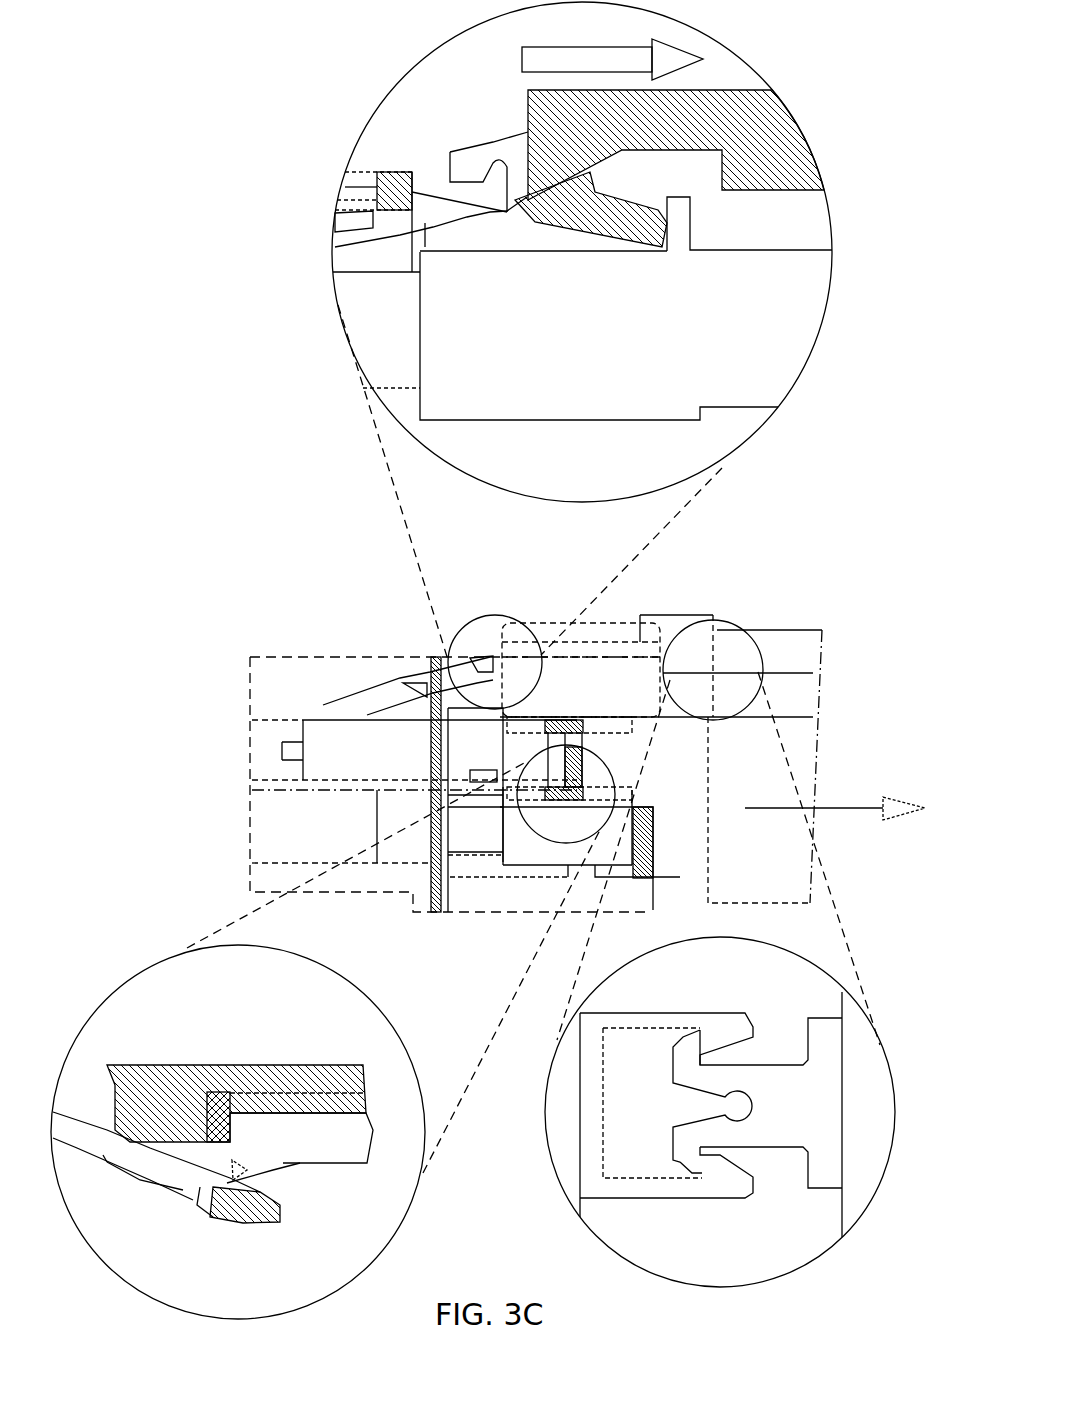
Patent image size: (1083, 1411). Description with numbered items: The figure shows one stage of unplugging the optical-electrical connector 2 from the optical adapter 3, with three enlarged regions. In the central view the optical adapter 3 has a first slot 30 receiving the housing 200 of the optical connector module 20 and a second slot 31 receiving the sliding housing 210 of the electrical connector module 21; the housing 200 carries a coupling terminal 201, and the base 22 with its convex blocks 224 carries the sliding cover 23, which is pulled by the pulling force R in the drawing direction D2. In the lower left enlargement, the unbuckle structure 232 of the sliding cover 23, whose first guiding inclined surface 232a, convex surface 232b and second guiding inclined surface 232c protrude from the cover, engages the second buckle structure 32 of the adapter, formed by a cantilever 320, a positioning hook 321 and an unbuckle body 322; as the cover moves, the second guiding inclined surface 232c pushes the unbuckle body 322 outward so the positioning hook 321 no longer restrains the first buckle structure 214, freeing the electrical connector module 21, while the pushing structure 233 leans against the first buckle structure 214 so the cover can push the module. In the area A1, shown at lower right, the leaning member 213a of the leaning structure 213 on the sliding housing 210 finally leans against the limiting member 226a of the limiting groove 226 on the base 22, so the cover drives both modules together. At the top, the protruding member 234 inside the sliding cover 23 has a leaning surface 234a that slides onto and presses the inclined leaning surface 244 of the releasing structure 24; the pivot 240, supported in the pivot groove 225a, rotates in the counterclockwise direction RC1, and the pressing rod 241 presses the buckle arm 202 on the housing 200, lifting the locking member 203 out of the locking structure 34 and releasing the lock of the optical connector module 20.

The counterclockwise direction RC1 is at (424, 135).
The pulling force R is at (668, 50).
The optical-electrical connector 2 is at (825, 627).
The optical adapter 3 is at (250, 656).
The optical connector module 20 is at (313, 723).
The electrical connector module 21 is at (390, 862).
The base 22 is at (448, 880).
The sliding cover 23 is at (528, 95).
The releasing structure 24 is at (505, 222).
The first slot 30 is at (282, 753).
The second slot 31 is at (282, 823).
The second buckle structure 32 is at (70, 1150).
The locking structure 34 is at (372, 187).
The housing 200 is at (347, 307).
The coupling terminal 201 is at (303, 750).
The buckle arm 202 is at (427, 252).
The locking member 203 is at (358, 213).
The sliding housing 210 is at (375, 793).
The leaning structure 213 is at (692, 1173).
The leaning member 213a is at (673, 1163).
The first buckle structure 214 is at (535, 728).
The convex block 224 is at (463, 837).
The pivot groove 225a is at (655, 242).
The limiting groove 226 is at (688, 1018).
The limiting member 226a is at (717, 1042).
The unbuckle structure 232 is at (590, 717).
The first guiding inclined surface 232a is at (130, 1143).
The convex surface 232b is at (196, 1204).
The second guiding inclined surface 232c is at (250, 1168).
The pushing structure 233 is at (140, 1085).
The protruding member 234 is at (538, 118).
The leaning surface 234a is at (593, 171).
The pivot 240 is at (640, 250).
The pressing rod 241 is at (477, 157).
The leaning surface 244 is at (513, 215).
The cantilever 320 is at (107, 1162).
The positioning hook 321 is at (262, 1180).
The unbuckle body 322 is at (240, 1220).
The area A1 is at (705, 622).
The drawing direction D2 is at (810, 795).